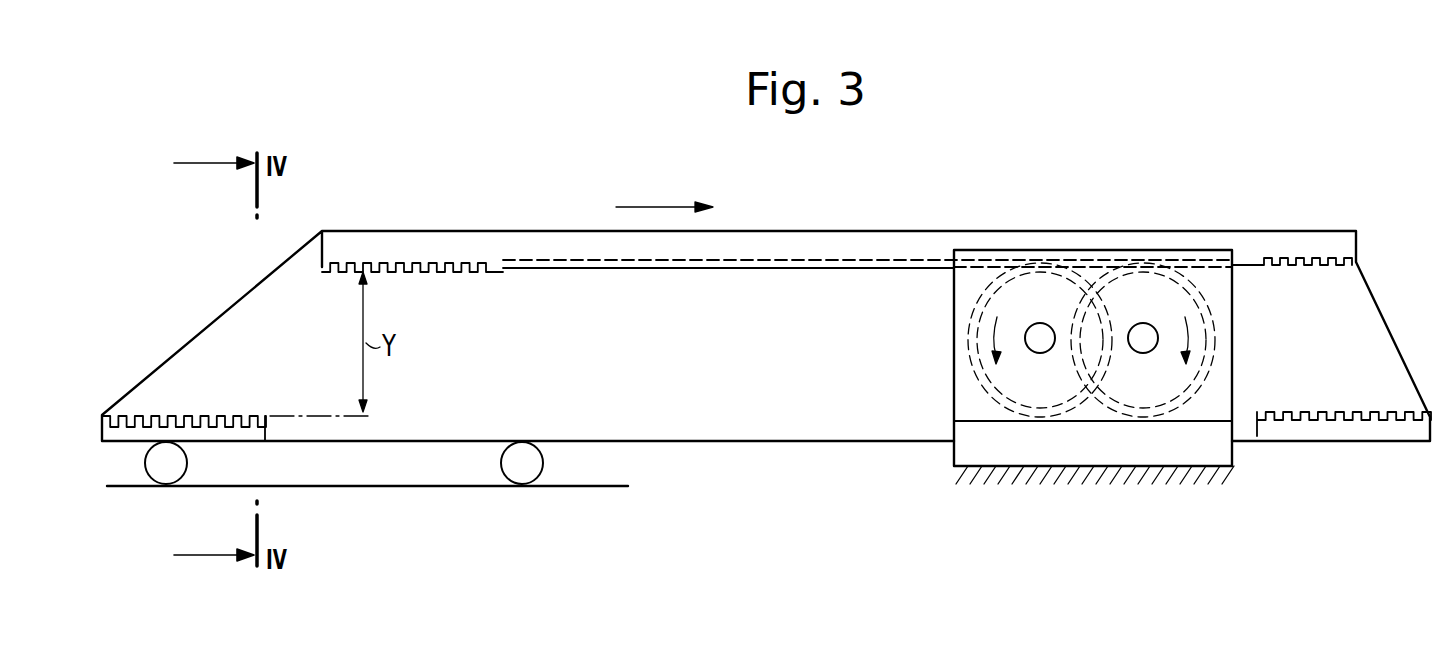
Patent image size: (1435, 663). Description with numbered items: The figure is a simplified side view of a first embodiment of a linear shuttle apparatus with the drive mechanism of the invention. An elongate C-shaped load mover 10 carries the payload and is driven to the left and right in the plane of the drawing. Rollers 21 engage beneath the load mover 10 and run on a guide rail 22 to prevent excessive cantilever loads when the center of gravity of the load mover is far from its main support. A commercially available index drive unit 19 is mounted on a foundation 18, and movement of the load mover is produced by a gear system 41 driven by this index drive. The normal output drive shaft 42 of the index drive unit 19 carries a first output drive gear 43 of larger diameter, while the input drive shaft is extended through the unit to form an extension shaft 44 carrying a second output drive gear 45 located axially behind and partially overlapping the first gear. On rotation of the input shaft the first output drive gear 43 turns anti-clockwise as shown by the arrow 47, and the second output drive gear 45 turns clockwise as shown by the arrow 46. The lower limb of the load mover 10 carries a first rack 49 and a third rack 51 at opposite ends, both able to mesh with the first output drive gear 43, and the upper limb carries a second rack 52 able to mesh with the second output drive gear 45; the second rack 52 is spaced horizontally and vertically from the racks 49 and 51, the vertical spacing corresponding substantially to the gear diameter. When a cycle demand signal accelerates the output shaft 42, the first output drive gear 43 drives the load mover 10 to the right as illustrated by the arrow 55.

The load mover 10 is at (733, 417).
The foundation 18 is at (992, 450).
The index drive unit 19 is at (987, 258).
The rollers 21 is at (163, 468).
The guide rail 22 is at (352, 487).
The gear system 41 is at (1097, 420).
The output drive shaft 42 is at (1048, 342).
The first output drive gear 43 is at (975, 357).
The extension shaft 44 is at (1144, 343).
The second output drive gear 45 is at (1205, 330).
The arrow 46 is at (1205, 373).
The arrow 47 is at (980, 330).
The first rack 49 is at (1334, 428).
The third rack 51 is at (118, 437).
The second rack 52 is at (816, 253).
The arrow 55 is at (632, 207).